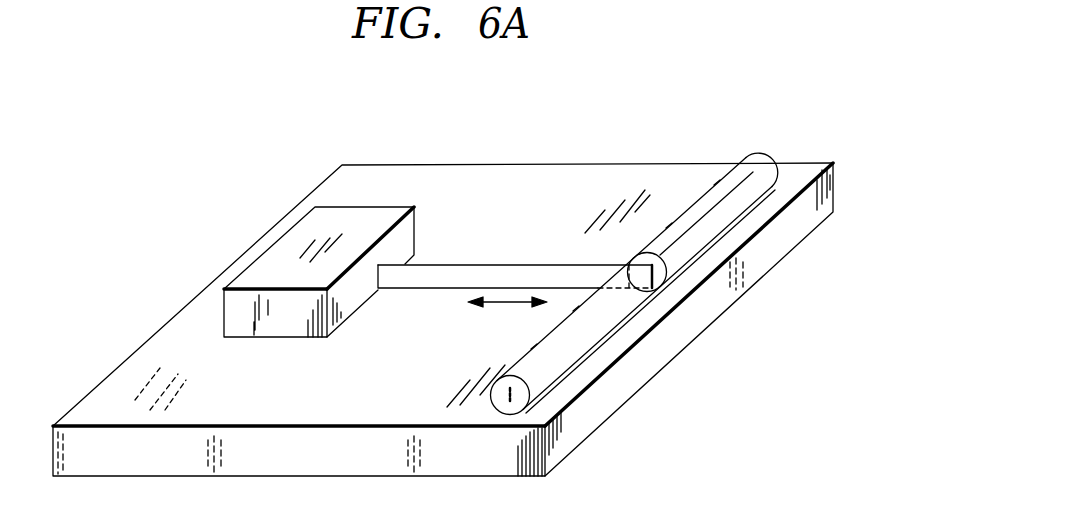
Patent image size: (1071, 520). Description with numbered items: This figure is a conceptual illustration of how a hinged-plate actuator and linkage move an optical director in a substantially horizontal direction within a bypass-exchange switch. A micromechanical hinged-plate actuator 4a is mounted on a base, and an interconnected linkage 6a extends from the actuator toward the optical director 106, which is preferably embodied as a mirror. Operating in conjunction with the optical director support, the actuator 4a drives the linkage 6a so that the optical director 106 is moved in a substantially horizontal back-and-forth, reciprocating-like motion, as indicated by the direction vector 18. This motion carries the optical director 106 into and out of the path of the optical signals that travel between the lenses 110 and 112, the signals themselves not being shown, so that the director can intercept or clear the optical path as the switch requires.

The micromechanical hinged-plate actuator 4a is at (283, 256).
The interconnected linkage 6a is at (482, 272).
The direction vector 18 is at (503, 305).
The optical director 106 is at (650, 289).
The lens 110 is at (577, 352).
The lens 112 is at (735, 203).